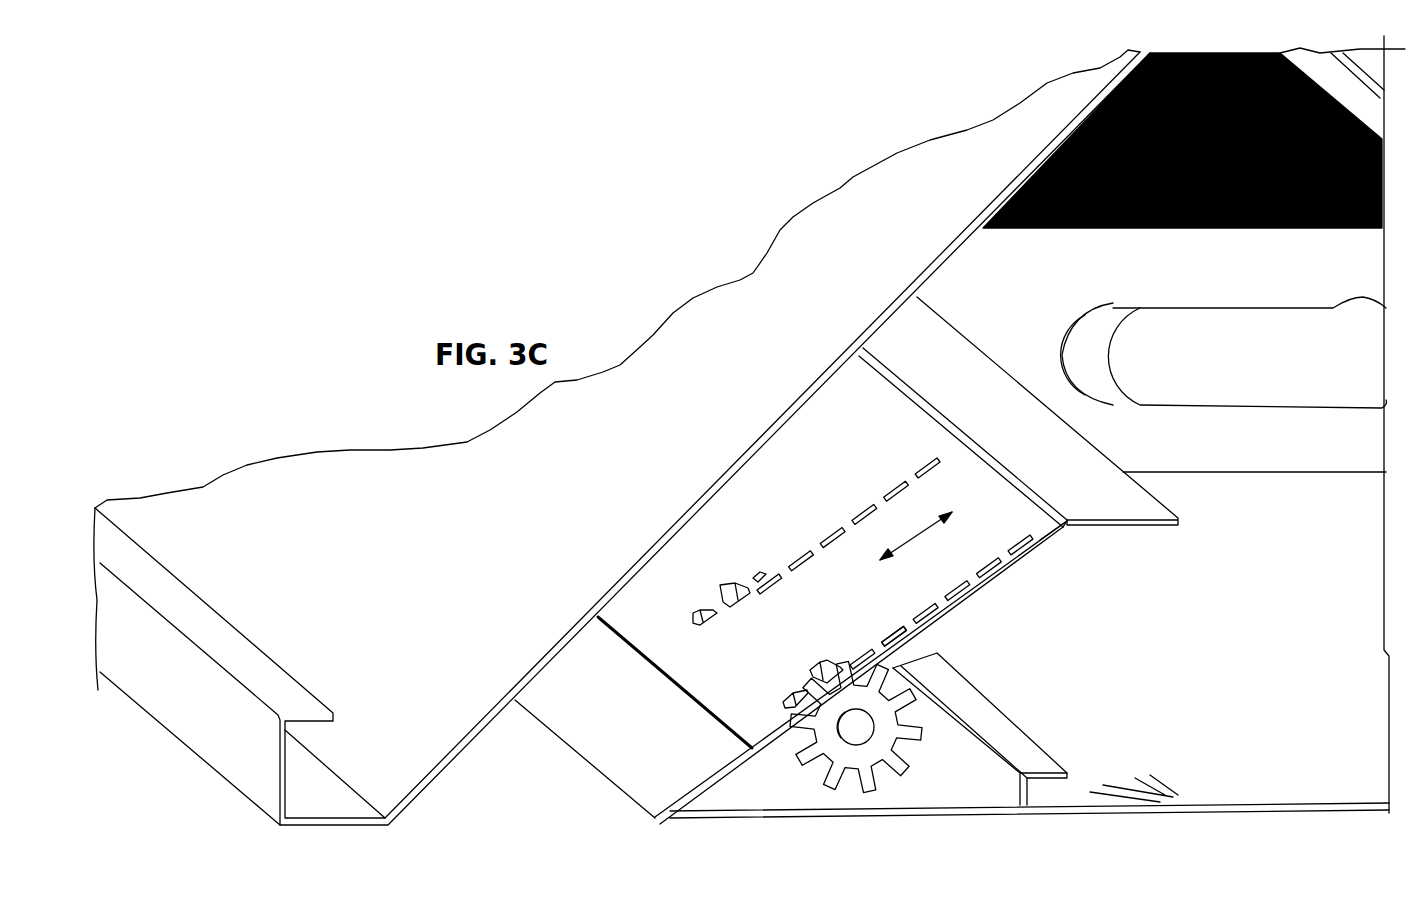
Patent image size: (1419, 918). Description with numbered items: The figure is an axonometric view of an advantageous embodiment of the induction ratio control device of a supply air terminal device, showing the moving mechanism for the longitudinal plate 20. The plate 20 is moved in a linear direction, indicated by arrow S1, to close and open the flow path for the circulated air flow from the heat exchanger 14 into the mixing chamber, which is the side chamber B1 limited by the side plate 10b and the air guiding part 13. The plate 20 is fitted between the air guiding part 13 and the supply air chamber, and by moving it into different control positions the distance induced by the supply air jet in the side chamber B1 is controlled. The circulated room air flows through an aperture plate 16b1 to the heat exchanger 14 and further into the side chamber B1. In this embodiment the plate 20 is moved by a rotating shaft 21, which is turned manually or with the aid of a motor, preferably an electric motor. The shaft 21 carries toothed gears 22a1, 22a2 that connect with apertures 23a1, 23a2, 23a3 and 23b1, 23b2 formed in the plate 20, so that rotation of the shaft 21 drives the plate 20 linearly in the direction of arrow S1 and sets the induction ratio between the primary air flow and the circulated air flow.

The side plate 10b is at (590, 580).
The air guiding part 13 is at (658, 772).
The heat exchanger 14 is at (1027, 300).
The plate 20 is at (1060, 530).
The shaft 21 is at (850, 740).
The toothed gear 22a1 is at (893, 672).
The toothed gear 22a2 is at (727, 584).
The aperture 23a1 is at (796, 690).
The aperture 23a2 is at (835, 666).
The aperture 23a3 is at (884, 630).
The aperture 23b1 is at (712, 626).
The aperture 23b2 is at (745, 598).
The aperture plate 16b1 is at (1132, 790).
The arrow S1 is at (920, 533).
The side chamber B1 is at (620, 706).